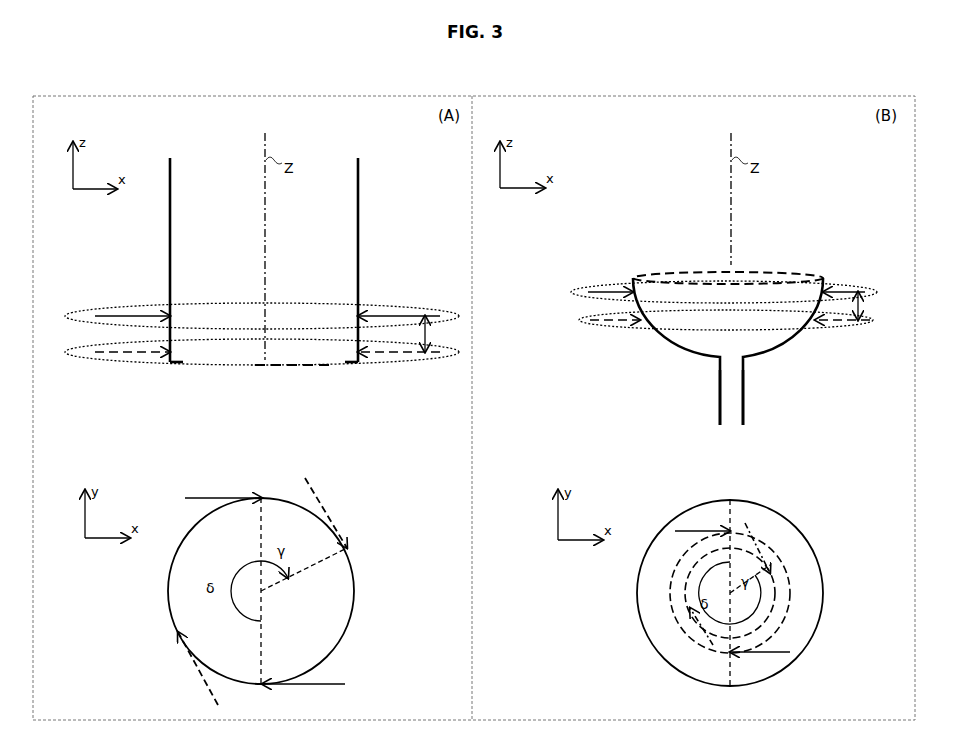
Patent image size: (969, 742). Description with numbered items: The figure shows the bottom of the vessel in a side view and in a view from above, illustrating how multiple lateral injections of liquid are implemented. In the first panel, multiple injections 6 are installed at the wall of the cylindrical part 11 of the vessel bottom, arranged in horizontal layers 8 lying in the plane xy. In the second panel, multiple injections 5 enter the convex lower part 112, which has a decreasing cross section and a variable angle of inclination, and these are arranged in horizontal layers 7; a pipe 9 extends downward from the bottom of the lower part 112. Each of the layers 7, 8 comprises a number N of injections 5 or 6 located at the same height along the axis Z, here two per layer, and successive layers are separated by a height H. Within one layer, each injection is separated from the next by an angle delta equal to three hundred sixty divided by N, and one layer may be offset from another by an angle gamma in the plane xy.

The cylindrical part 11 is at (358, 228).
The horizontal layers 8 is at (128, 300).
The injections 6 is at (98, 319).
The lower part 112 is at (681, 347).
The outlet pipe 9 is at (745, 403).
The horizontal layers 7 is at (613, 280).
The injections 5 is at (825, 281).